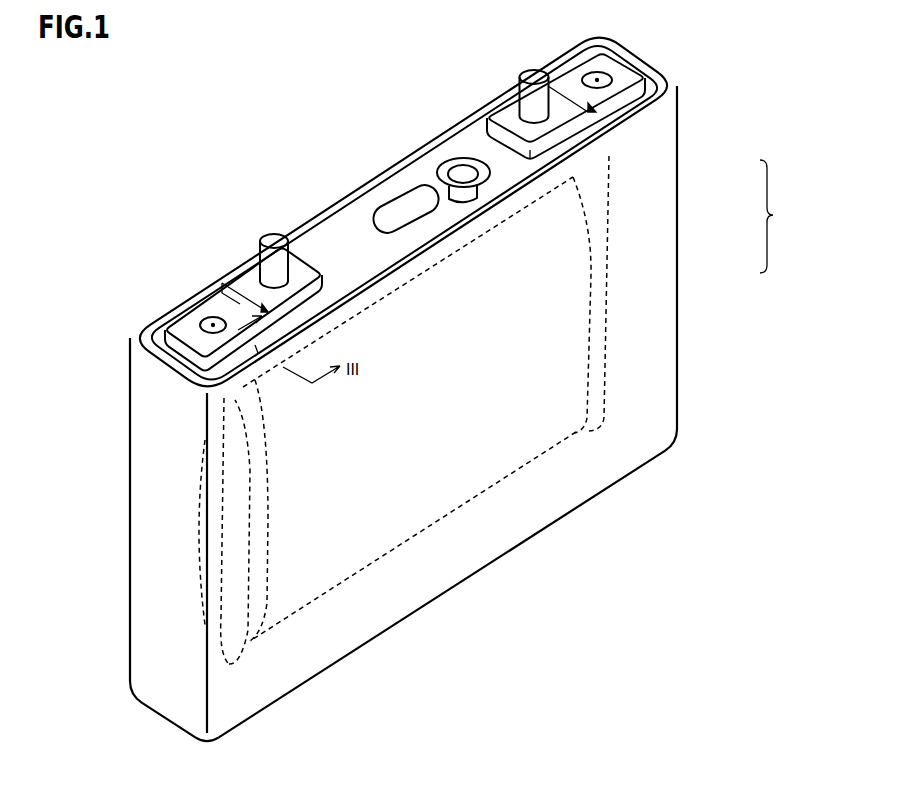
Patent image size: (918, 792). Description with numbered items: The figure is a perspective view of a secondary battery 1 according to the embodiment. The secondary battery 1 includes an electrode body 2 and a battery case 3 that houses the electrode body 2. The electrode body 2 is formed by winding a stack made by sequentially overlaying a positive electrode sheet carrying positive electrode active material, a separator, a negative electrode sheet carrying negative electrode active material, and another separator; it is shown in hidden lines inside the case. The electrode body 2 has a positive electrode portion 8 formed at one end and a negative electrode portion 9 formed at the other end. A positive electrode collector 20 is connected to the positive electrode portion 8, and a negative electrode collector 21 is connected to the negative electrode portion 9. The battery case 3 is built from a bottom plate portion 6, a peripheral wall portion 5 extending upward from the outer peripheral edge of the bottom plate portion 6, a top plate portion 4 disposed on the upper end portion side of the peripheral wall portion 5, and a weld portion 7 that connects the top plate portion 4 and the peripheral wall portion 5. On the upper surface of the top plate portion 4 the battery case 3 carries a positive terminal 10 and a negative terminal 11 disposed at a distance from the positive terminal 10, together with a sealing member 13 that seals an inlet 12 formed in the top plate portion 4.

The secondary battery 1 is at (774, 216).
The electrode body 2 is at (557, 267).
The battery case 3 is at (640, 198).
The top plate portion 4 is at (392, 187).
The peripheral wall portion 5 is at (147, 433).
The bottom plate portion 6 is at (507, 556).
The weld portion 7 is at (322, 216).
The positive electrode portion 8 is at (250, 563).
The negative electrode portion 9 is at (613, 357).
The positive terminal 10 is at (244, 284).
The negative terminal 11 is at (507, 115).
The inlet 12 is at (420, 152).
The sealing member 13 is at (465, 168).
The positive electrode collector 20 is at (222, 513).
The negative electrode collector 21 is at (600, 160).